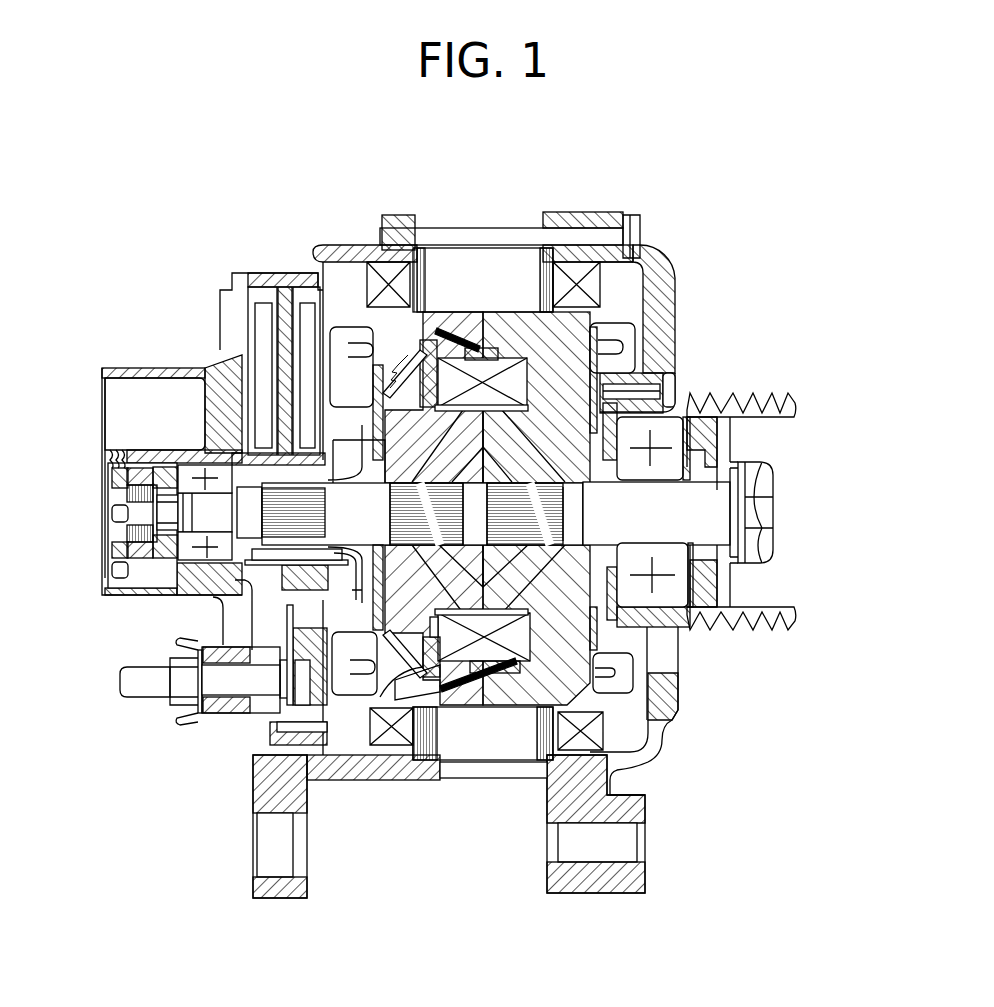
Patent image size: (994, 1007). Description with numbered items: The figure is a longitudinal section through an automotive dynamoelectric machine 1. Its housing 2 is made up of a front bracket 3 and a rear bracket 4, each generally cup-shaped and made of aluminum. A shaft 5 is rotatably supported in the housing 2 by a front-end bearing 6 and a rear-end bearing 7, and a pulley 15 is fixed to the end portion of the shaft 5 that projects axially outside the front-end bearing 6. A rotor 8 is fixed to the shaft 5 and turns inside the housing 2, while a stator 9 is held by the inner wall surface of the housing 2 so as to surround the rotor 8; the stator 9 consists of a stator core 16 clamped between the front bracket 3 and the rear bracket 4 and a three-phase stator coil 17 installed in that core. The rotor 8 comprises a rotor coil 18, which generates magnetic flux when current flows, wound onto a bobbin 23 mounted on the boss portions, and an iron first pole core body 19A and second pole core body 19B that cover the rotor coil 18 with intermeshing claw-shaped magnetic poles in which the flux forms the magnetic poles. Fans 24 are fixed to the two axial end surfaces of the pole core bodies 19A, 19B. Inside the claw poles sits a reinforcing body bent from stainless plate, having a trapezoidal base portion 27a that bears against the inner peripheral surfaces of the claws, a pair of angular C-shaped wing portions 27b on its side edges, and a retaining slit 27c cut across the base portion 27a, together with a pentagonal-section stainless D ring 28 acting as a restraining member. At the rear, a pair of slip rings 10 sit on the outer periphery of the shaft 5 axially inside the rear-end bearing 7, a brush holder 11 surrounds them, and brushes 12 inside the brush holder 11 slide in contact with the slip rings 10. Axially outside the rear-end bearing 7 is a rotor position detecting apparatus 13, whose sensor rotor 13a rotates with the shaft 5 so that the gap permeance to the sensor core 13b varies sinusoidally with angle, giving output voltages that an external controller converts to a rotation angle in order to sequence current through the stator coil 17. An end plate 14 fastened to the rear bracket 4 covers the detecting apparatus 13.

The automotive dynamoelectric machine 1 is at (136, 182).
The housing 2 is at (660, 795).
The front bracket 3 is at (678, 312).
The rear bracket 4 is at (240, 730).
The shaft 5 is at (703, 527).
The front-end bearing 6 is at (672, 600).
The rear-end bearing 7 is at (190, 552).
The rotor 8 is at (523, 822).
The stator 9 is at (448, 168).
The slip rings 10 is at (312, 590).
The brush holder 11 is at (265, 280).
The brushes 12 is at (302, 345).
The rotor position detecting apparatus 13 is at (112, 502).
The sensor rotor 13a is at (120, 533).
The sensor core 13b is at (133, 477).
The end plate 14 is at (100, 400).
The pulley 15 is at (747, 400).
The stator core 16 is at (448, 263).
The three-phase stator coil 17 is at (393, 273).
The rotor coil 18 is at (470, 683).
The first pole core body 19A is at (530, 683).
The second pole core body 19B is at (440, 687).
The bobbin 23 is at (403, 692).
The fans 24 is at (352, 330).
The base portion 27a is at (462, 330).
The wing portions 27b is at (395, 303).
The slit 27c is at (483, 411).
The D ring 28 is at (490, 343).